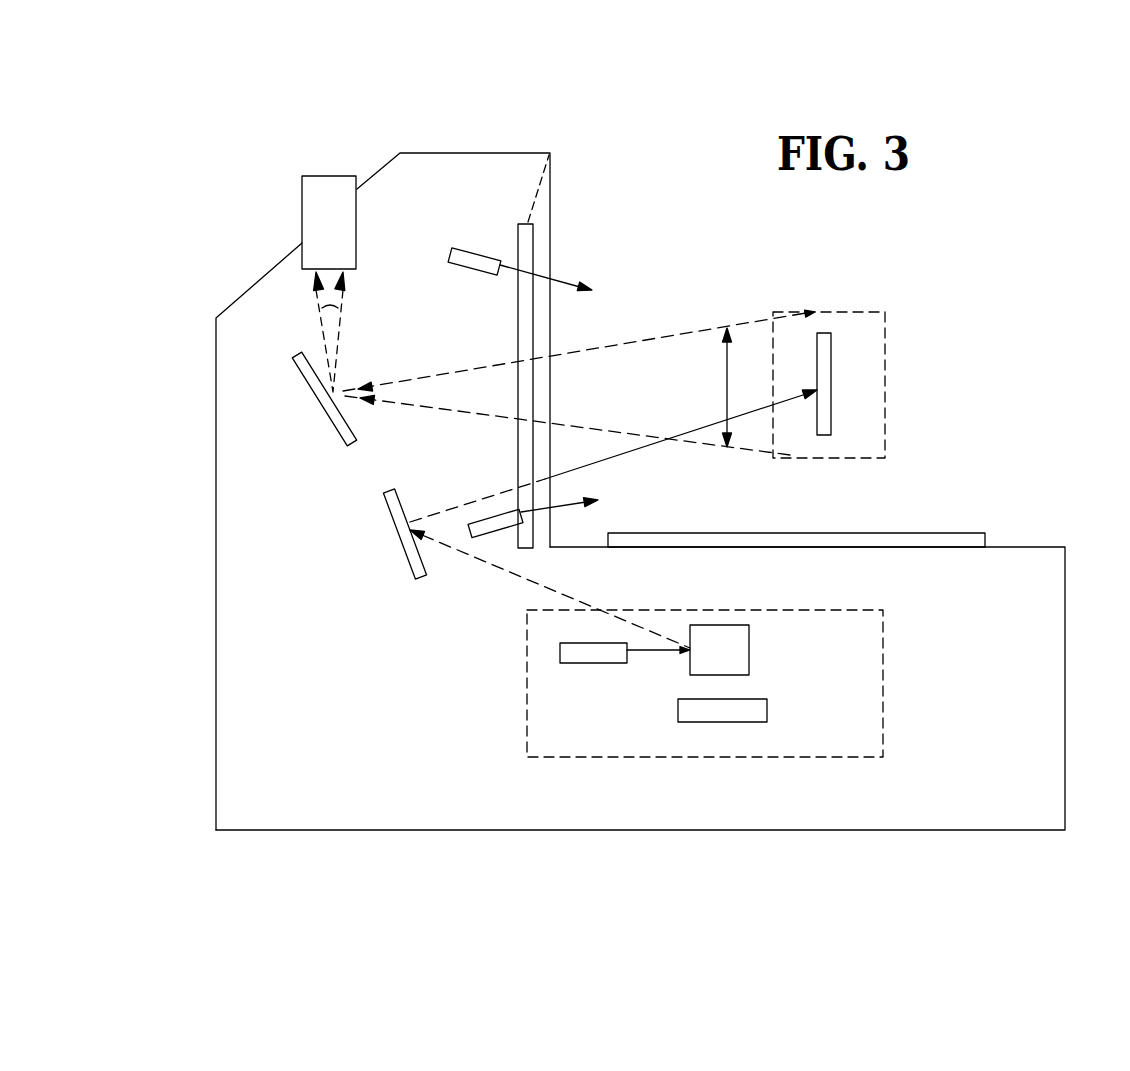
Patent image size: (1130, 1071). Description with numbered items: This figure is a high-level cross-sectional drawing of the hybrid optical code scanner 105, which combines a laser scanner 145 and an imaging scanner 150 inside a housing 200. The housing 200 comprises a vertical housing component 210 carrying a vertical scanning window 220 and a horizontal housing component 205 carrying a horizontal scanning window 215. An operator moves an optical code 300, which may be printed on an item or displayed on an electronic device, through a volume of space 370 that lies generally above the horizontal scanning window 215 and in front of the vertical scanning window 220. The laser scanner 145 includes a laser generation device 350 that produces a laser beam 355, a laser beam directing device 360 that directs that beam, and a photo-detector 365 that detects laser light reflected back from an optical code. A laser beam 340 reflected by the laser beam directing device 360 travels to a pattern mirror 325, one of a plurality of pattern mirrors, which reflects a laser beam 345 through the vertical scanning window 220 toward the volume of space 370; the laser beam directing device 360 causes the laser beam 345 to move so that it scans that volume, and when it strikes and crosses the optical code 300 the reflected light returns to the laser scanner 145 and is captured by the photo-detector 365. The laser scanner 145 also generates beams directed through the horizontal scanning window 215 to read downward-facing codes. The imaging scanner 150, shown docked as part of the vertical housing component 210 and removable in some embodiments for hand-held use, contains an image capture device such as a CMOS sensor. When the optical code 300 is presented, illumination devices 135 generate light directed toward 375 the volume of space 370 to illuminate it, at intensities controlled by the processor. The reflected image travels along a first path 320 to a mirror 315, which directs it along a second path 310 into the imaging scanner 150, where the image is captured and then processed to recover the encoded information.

The hybrid optical code scanner 105 is at (240, 78).
The illumination device 135 is at (483, 516).
The laser scanner 145 is at (883, 668).
The imaging scanner 150 is at (302, 207).
The housing 200 is at (330, 785).
The horizontal housing component 205 is at (1042, 545).
The vertical housing component 210 is at (515, 152).
The horizontal scanning window 215 is at (958, 538).
The vertical scanning window 220 is at (517, 245).
The optical code 300 is at (831, 410).
The second path 310 is at (325, 312).
The mirror 315 is at (298, 375).
The first path 320 is at (727, 385).
The pattern mirror 325 is at (398, 530).
The laser beam 340 is at (520, 578).
The laser beam 345 is at (637, 448).
The laser generation device 350 is at (577, 664).
The laser beam 355 is at (673, 651).
The laser beam directing device 360 is at (749, 655).
The photo-detector 365 is at (767, 710).
The volume of space 370 is at (885, 338).
The light directed toward scan volume 375 is at (565, 278).